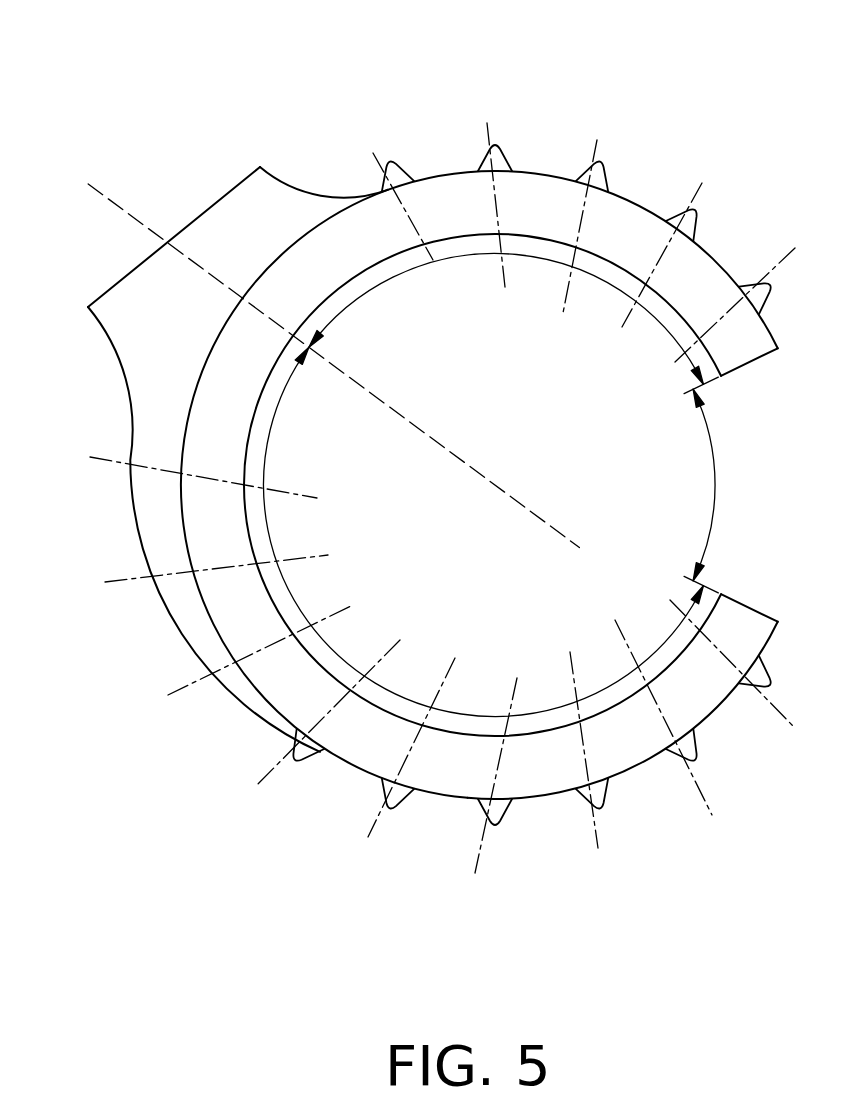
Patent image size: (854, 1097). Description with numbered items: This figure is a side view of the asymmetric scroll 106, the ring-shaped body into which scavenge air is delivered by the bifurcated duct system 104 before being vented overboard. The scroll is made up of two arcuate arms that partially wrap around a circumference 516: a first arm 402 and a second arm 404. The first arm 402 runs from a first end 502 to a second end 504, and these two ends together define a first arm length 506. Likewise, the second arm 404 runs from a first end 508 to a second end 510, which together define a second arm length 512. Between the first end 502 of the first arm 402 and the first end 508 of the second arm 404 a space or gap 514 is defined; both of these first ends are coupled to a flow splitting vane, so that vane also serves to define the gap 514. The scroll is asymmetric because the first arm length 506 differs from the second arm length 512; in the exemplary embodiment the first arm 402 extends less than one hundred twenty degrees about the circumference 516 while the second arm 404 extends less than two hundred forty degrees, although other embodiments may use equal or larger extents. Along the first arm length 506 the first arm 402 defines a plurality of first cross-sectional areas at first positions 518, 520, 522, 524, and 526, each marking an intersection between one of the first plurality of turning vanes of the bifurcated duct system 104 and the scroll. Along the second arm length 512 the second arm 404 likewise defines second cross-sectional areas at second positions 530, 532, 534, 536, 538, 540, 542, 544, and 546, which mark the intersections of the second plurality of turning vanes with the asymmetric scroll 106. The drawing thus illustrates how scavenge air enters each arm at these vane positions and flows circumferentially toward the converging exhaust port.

The bifurcated duct system 104 is at (238, 459).
The asymmetric scroll 106 is at (665, 80).
The first arm 402 is at (647, 205).
The second arm 404 is at (648, 763).
The first end of first arm 502 is at (740, 368).
The second end of first arm 504 is at (167, 243).
The first arm length 506 is at (413, 273).
The first end of second arm 508 is at (752, 608).
The second end of second arm 510 is at (163, 242).
The second arm length 512 is at (293, 595).
The gap 514 is at (717, 476).
The circumference 516 is at (363, 770).
The first position 518 is at (795, 252).
The first position 520 is at (702, 185).
The first position 522 is at (599, 148).
The first position 524 is at (489, 130).
The first position 526 is at (377, 160).
The second position 530 is at (783, 714).
The second position 532 is at (707, 803).
The second position 534 is at (599, 835).
The second position 536 is at (483, 862).
The second position 538 is at (378, 837).
The second position 540 is at (262, 778).
The second position 542 is at (168, 695).
The second position 544 is at (105, 582).
The second position 546 is at (90, 457).